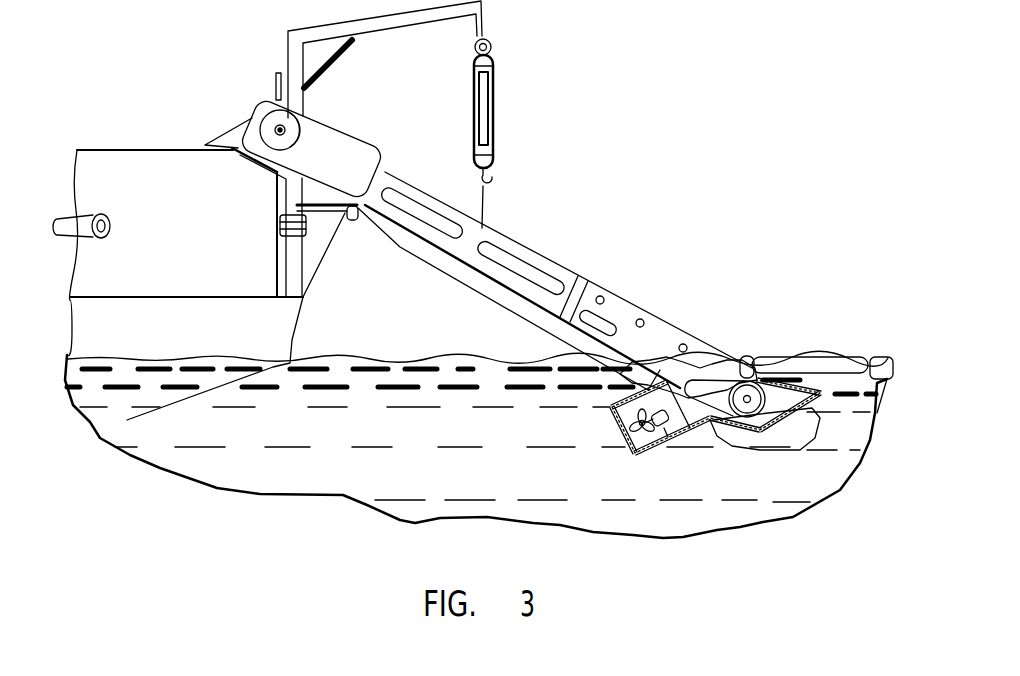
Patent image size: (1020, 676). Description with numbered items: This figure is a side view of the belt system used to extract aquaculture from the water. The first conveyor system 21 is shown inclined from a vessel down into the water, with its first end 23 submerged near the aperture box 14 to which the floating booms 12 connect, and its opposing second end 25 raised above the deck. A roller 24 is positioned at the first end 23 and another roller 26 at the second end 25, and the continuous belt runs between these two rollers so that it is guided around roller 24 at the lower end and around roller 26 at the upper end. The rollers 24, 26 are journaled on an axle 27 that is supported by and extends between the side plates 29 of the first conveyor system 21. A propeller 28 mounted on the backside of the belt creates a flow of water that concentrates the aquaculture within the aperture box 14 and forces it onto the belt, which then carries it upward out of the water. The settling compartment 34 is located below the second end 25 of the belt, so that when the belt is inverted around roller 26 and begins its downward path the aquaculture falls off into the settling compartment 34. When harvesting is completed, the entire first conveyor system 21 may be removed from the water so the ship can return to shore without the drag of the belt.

The boom 12 is at (830, 360).
The aperture box 14 is at (872, 413).
The first conveyor system 21 is at (541, 266).
The first end 23 is at (750, 385).
The roller 24 is at (742, 392).
The second end 25 is at (277, 112).
The roller 26 is at (300, 128).
The axle 27 is at (277, 130).
The propeller 28 is at (627, 440).
The side plates 29 is at (357, 153).
The settling compartment 34 is at (131, 136).